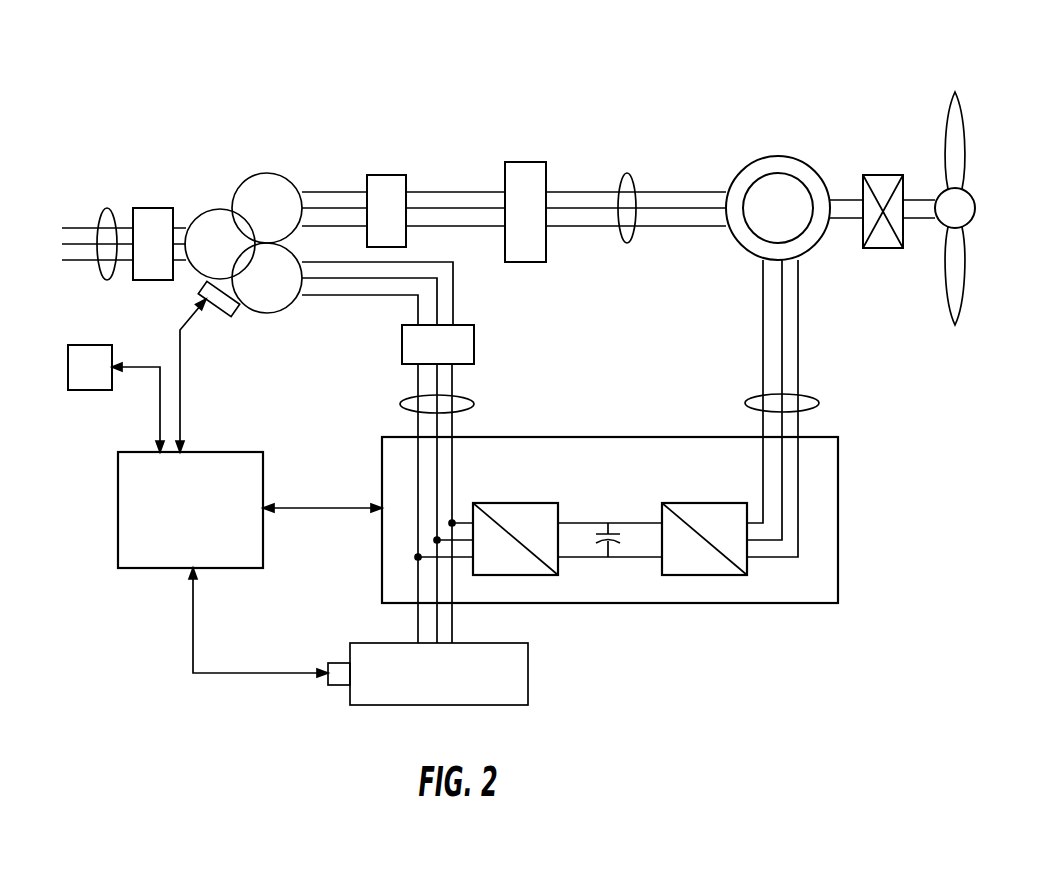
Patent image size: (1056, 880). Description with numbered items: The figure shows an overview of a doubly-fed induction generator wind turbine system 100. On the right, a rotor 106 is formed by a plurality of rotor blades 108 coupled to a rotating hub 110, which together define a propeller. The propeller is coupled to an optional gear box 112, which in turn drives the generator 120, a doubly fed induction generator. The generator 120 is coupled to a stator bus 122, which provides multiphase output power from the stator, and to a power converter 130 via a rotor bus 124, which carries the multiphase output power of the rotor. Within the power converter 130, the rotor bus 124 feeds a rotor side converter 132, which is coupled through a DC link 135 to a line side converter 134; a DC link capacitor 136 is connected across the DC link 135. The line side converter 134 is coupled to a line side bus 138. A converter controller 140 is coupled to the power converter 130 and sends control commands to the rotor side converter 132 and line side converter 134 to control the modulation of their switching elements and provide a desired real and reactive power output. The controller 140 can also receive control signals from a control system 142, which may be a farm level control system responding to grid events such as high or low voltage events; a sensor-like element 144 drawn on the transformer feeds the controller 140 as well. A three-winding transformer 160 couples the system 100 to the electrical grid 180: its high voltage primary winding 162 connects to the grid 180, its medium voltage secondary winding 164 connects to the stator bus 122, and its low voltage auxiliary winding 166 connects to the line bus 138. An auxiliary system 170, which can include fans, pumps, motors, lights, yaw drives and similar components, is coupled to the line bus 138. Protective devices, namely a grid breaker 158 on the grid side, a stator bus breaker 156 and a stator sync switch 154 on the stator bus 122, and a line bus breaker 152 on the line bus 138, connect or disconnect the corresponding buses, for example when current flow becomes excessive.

The wind turbine system 100 is at (707, 134).
The rotor 106 is at (972, 211).
The rotor blades 108 is at (955, 92).
The rotating hub 110 is at (968, 194).
The gear box 112 is at (878, 175).
The doubly fed induction generator 120 is at (778, 156).
The stator bus 122 is at (625, 173).
The rotor bus 124 is at (752, 395).
The power converter 130 is at (628, 546).
The rotor side converter 132 is at (690, 575).
The line side converter 134 is at (522, 575).
The DC link 135 is at (590, 523).
The DC link capacitor 136 is at (618, 541).
The line side bus 138 is at (400, 404).
The converter controller 140 is at (240, 452).
The control system 142 is at (90, 345).
The transformer sensor 144 is at (214, 312).
The line bus breaker 152 is at (460, 325).
The stator sync switch 154 is at (520, 162).
The stator bus breaker 156 is at (380, 175).
The grid breaker 158 is at (148, 208).
The transformer 160 is at (245, 221).
The primary winding 162 is at (211, 210).
The secondary winding 164 is at (265, 173).
The auxiliary winding 166 is at (270, 313).
The auxiliary system 170 is at (370, 643).
The electrical grid 180 is at (105, 207).